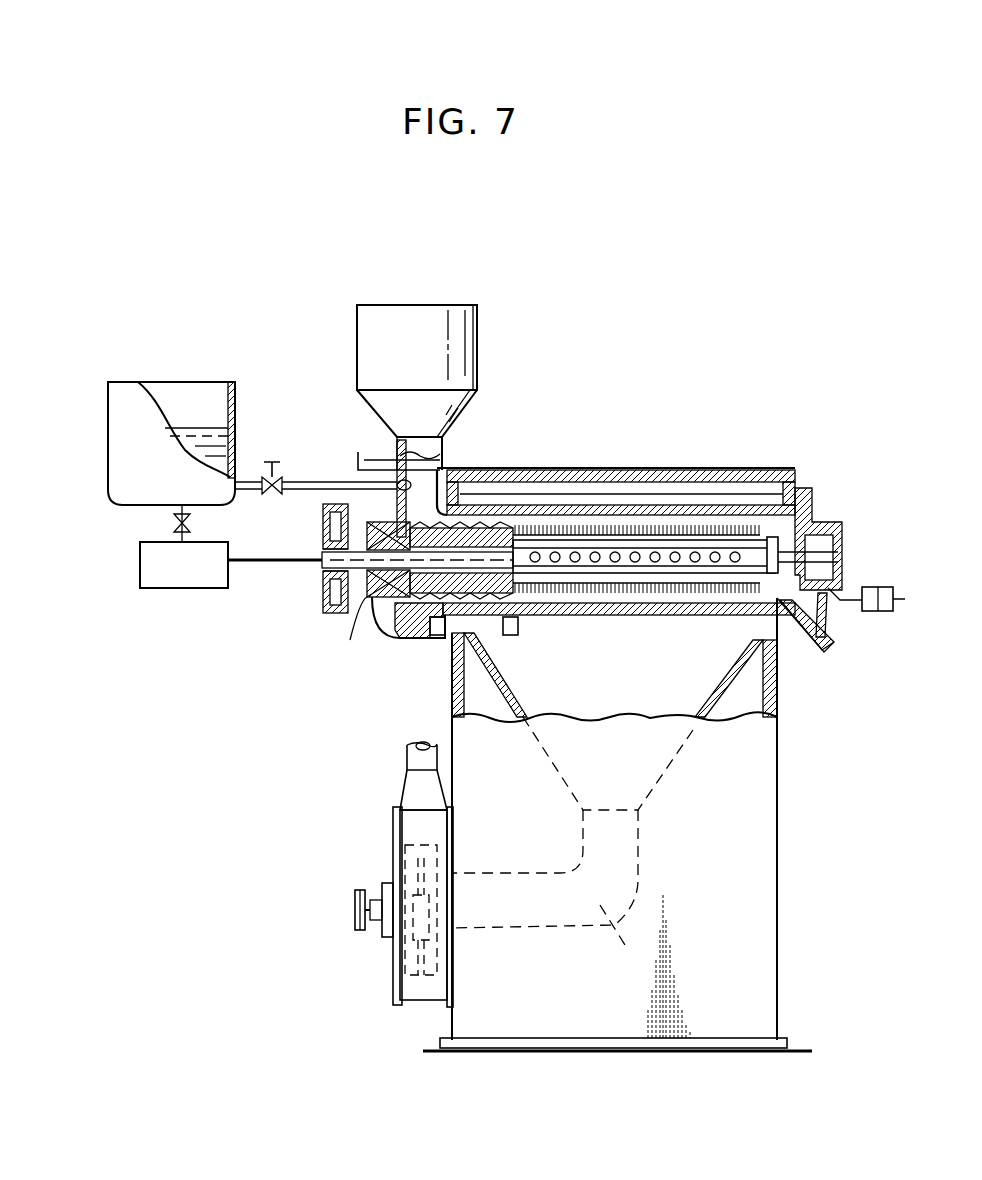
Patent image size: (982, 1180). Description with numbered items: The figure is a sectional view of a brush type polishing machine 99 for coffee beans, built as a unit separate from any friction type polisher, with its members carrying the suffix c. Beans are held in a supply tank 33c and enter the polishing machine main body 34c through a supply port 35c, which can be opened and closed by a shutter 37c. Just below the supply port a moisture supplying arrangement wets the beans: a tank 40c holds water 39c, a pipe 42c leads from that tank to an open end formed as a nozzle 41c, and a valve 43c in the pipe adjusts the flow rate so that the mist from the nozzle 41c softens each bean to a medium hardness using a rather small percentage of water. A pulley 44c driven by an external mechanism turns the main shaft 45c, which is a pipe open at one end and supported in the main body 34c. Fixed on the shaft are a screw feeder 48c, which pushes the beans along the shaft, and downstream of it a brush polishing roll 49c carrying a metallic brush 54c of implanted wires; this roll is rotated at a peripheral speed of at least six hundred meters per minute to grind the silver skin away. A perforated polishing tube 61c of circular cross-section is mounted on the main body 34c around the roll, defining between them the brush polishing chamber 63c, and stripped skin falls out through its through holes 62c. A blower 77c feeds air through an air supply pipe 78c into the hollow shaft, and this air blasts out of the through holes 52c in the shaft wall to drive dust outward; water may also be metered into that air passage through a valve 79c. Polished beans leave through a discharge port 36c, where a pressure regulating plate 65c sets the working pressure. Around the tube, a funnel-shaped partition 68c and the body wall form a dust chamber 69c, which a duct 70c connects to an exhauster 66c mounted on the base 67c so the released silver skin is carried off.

The brush type polishing machine 99 is at (604, 350).
The supply tank 33c is at (420, 316).
The supply port 35c is at (445, 440).
The nozzle 41c is at (440, 470).
The shutter 37c is at (360, 461).
The tank 40c is at (122, 488).
The water 39c is at (200, 436).
The valve 79c is at (172, 519).
The blower 77c is at (170, 588).
The valve 43c is at (280, 500).
The pipe 42c is at (303, 484).
The air supply pipe 78c is at (263, 568).
The pulley 44c is at (328, 610).
The main shaft 45c is at (368, 592).
The polishing machine main body 34c is at (374, 612).
The screw feeder 48c is at (418, 606).
The brush polishing roll 49c is at (536, 598).
The brush polishing chamber 63c is at (658, 553).
The metallic brush 54c is at (612, 528).
The through holes 52c is at (698, 480).
The through holes 62c is at (546, 480).
The polishing tube 61c is at (712, 506).
The discharge port 36c is at (803, 622).
The pressure regulating plate 65c is at (822, 620).
The base 67c is at (463, 1015).
The funnel-shaped partition 68c is at (492, 718).
The dust chamber 69c is at (640, 670).
The duct 70c is at (616, 935).
The exhauster 66c is at (393, 955).